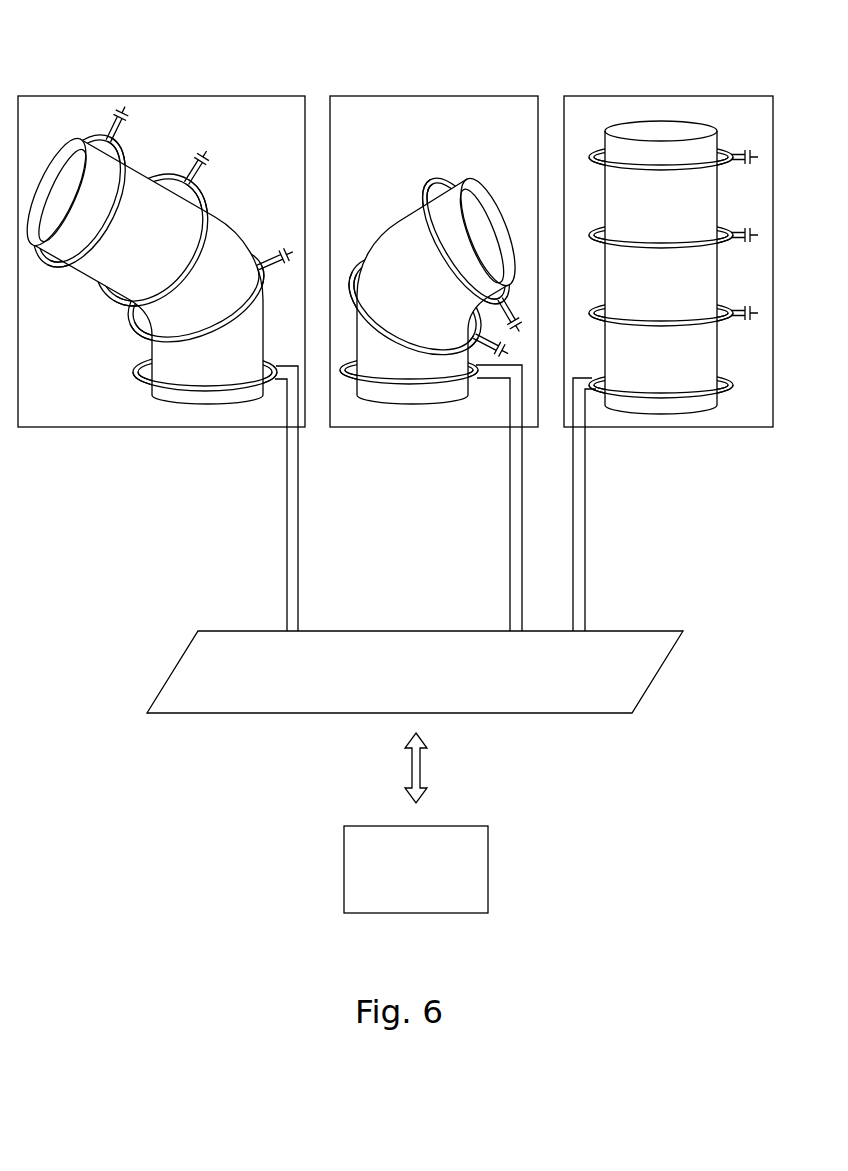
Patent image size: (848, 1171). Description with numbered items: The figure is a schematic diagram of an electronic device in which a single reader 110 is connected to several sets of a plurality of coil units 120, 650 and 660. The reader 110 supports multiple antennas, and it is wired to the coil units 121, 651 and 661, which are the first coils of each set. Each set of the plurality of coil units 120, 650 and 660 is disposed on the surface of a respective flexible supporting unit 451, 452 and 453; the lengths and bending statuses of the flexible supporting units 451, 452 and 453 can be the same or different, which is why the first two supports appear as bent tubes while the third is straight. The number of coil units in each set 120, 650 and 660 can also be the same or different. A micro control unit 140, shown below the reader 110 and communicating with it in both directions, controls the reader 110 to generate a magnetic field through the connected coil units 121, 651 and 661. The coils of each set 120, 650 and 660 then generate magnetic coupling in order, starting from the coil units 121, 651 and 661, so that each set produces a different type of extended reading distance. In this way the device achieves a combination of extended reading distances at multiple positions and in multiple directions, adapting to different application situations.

The set of a plurality of coil units 120 is at (160, 95).
The flexible supporting unit 451 is at (223, 223).
The coil unit 121 is at (133, 372).
The set of a plurality of coil units 650 is at (435, 95).
The flexible supporting unit 452 is at (397, 225).
The coil unit 651 is at (482, 387).
The set of a plurality of coil units 660 is at (668, 95).
The flexible supporting unit 453 is at (717, 250).
The coil unit 661 is at (730, 397).
The reader 110 is at (655, 680).
The micro control unit 140 is at (488, 870).